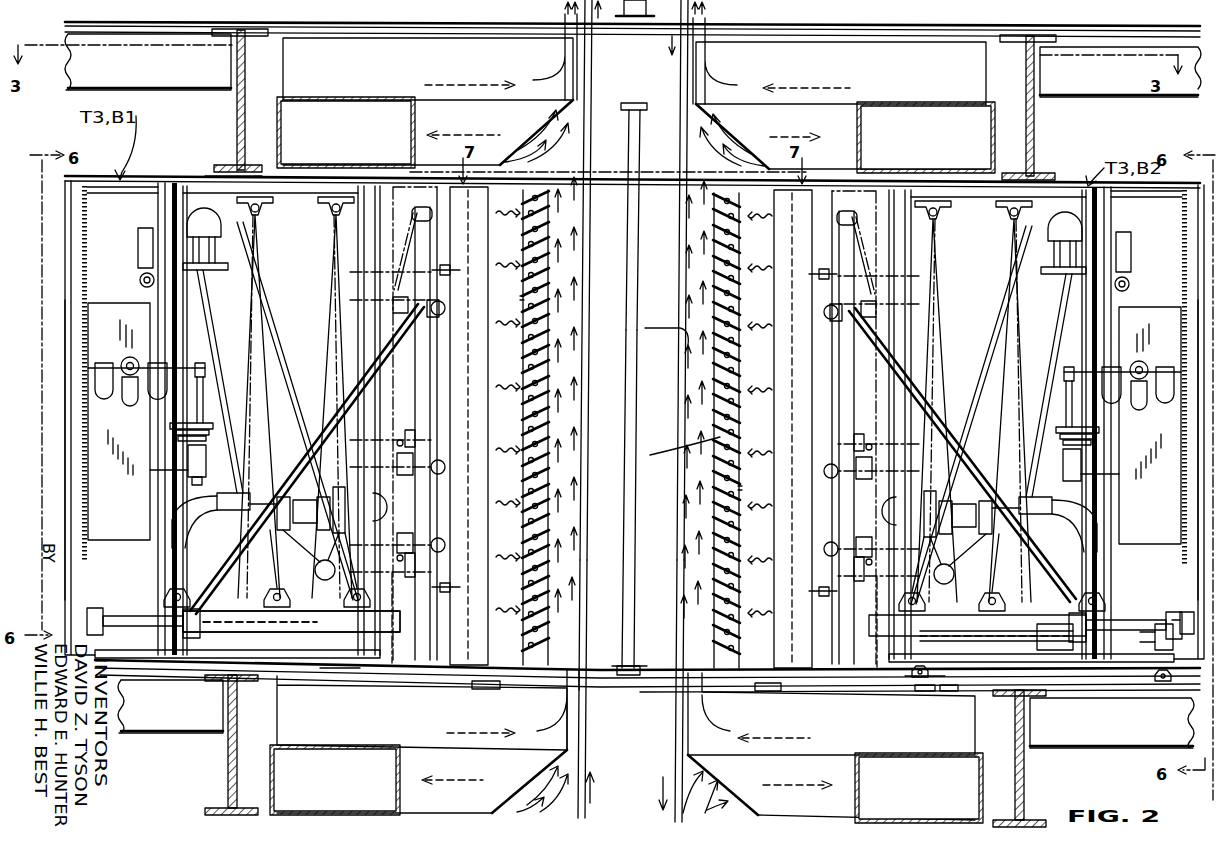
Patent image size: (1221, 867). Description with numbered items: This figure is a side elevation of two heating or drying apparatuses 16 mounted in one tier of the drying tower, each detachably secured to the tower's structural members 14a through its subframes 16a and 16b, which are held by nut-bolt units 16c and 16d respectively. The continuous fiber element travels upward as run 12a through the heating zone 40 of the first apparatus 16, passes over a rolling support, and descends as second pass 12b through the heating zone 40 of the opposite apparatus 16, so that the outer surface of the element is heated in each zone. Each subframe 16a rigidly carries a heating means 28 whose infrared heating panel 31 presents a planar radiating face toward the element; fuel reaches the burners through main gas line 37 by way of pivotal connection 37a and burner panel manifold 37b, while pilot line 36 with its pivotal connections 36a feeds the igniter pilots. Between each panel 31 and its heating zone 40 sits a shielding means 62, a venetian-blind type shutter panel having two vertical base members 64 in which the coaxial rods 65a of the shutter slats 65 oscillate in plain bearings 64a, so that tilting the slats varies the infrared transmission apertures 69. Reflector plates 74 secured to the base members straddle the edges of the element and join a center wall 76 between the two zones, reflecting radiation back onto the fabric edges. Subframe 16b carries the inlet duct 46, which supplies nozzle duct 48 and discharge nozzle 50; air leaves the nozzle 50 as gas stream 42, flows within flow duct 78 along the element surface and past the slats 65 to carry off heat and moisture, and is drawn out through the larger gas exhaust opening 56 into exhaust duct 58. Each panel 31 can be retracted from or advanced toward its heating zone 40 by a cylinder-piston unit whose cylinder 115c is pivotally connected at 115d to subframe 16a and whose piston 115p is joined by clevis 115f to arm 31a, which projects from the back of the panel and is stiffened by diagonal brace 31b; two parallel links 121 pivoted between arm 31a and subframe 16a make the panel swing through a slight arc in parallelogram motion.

The run 12a is at (593, 90).
The second pass 12b is at (681, 92).
The structural members 14a is at (652, 676).
The heating apparatus 16 is at (212, 170).
The apparatus subframe 16a is at (65, 465).
The apparatus subframe 16b is at (335, 675).
The nut-bolt units 16c is at (920, 668).
The nut-bolt units 16d is at (775, 692).
The heating means 28 is at (631, 423).
The infrared heating panel 31 is at (488, 197).
The arm 31a is at (868, 640).
The diagonal brace 31b is at (967, 465).
The pilot line 36 is at (290, 548).
The pivotal connections 36a is at (334, 632).
The main gas line 37 is at (256, 480).
The pivotal connection 37a is at (1048, 230).
The burner panel manifold 37b is at (353, 307).
The heating zone 40 is at (645, 328).
The gas stream 42 is at (572, 632).
The inlet duct 46 is at (302, 68).
The nozzle duct 48 is at (450, 717).
The discharge nozzle 50 is at (565, 52).
The gas exhaust opening 56 is at (565, 115).
The exhaust duct 58 is at (278, 112).
The shielding means 62 is at (650, 455).
The base members 64 is at (523, 247).
The plain bearing 64a is at (525, 300).
The shutter slats 65 is at (740, 458).
The coaxial rods 65a is at (738, 488).
The infrared transmission apertures 69 is at (523, 424).
The reflector plate 74 is at (615, 180).
The center wall 76 is at (636, 390).
The flow duct 78 is at (680, 628).
The cylinder 115c is at (1138, 652).
The pivotal connection 115d is at (1185, 618).
The clevis 115f is at (950, 645).
The piston 115p is at (1010, 642).
The parallel links 121 is at (1005, 305).